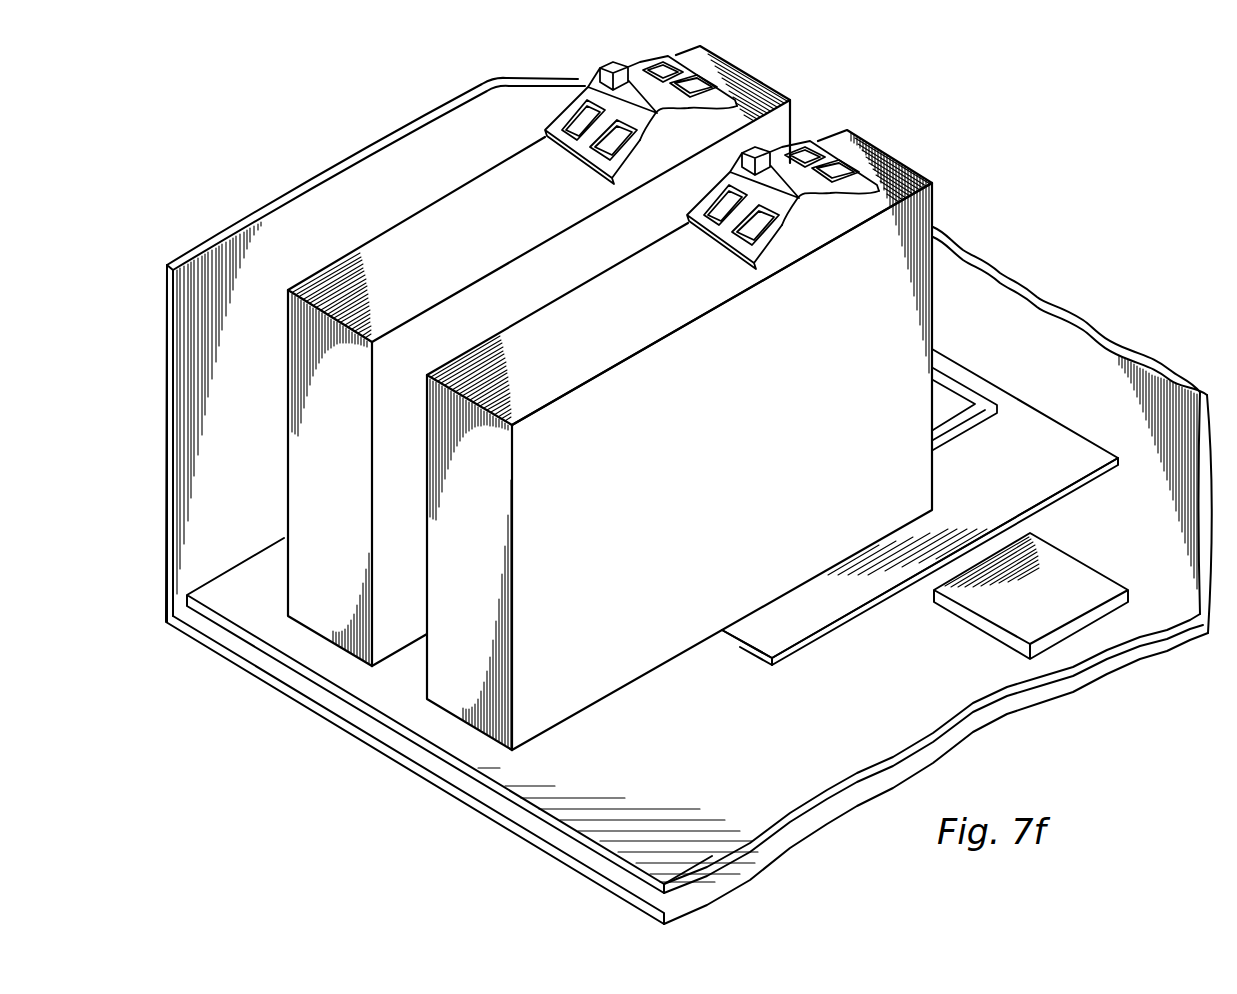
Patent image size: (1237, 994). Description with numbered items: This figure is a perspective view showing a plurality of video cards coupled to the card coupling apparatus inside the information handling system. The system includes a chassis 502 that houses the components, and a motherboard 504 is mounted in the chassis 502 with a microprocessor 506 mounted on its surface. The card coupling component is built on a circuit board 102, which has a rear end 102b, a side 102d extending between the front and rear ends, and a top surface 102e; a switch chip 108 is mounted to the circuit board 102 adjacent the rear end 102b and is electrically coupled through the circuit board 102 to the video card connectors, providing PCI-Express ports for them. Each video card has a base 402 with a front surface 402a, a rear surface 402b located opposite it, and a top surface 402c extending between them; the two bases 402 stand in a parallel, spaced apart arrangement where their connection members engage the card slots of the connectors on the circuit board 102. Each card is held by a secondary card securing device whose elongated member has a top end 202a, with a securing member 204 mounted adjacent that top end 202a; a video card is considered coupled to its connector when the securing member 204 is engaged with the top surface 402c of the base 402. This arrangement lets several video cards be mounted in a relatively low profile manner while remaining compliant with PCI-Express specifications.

The circuit board 102 is at (1134, 296).
The rear end 102b is at (1030, 407).
The side 102d is at (835, 627).
The top surface 102e is at (783, 632).
The switch chip 108 is at (947, 395).
The top end 202a is at (598, 66).
The securing member 204 is at (673, 113).
The base 402 is at (626, 398).
The front surface 402a is at (778, 88).
The rear surface 402b is at (354, 494).
The top surface 402c is at (454, 272).
The chassis 502 is at (278, 240).
The motherboard 504 is at (240, 577).
The microprocessor 506 is at (1060, 577).